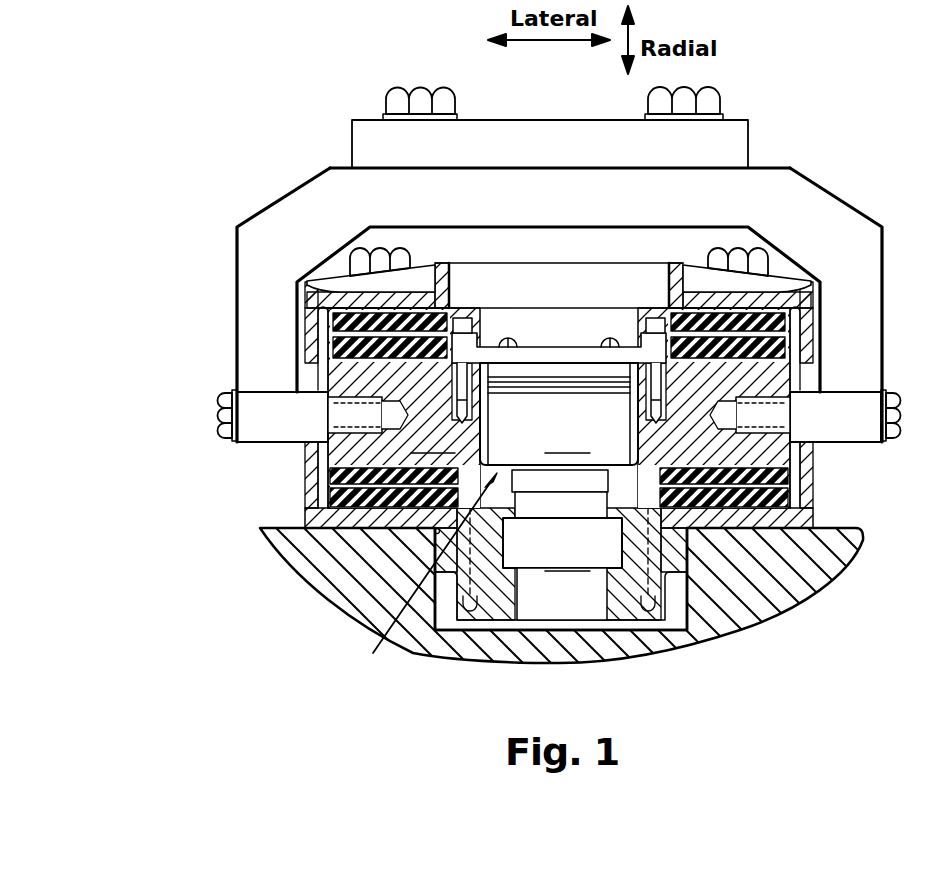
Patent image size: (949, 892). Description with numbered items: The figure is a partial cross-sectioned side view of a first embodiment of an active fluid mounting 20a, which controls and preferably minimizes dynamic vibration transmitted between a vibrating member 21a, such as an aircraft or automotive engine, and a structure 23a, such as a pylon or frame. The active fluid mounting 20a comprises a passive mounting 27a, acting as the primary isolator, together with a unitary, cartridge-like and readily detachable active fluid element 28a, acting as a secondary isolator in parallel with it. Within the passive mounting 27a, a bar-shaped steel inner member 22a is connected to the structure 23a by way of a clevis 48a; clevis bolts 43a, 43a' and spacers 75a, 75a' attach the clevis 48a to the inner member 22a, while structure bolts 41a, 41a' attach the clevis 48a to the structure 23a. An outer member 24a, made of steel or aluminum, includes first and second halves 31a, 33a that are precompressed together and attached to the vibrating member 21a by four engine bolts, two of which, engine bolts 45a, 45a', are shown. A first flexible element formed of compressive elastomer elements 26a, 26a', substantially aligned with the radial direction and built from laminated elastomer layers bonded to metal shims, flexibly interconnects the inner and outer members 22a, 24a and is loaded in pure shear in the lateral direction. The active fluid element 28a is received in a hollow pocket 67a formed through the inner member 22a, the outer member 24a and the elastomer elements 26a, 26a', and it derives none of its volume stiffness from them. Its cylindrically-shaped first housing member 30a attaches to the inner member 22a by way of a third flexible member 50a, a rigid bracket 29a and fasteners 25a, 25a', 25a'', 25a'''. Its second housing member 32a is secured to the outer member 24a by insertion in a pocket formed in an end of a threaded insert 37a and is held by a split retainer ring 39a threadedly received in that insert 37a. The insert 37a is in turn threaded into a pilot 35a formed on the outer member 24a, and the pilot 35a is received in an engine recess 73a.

The active fluid mounting 20a is at (288, 281).
The vibrating member 21a is at (273, 567).
The inner member 22a is at (559, 400).
The structure 23a is at (510, 120).
The outer member 24a is at (683, 283).
The fastener 25a is at (535, 316).
The fastener 25a' is at (596, 310).
The fastener 25a'' is at (499, 345).
The fastener 25a''' is at (648, 348).
The compressive elastomer element 26a is at (482, 335).
The compressive elastomer element 26a' is at (501, 482).
The passive mounting 27a is at (828, 272).
The active fluid element 28a is at (418, 582).
The rigid bracket 29a is at (538, 348).
The first housing member 30a is at (559, 414).
The first half 31a is at (805, 320).
The second housing member 32a is at (562, 545).
The second half 33a is at (815, 507).
The pilot 35a is at (690, 565).
The threaded insert 37a is at (640, 622).
The split retainer ring 39a is at (640, 517).
The structure bolt 41a is at (382, 84).
The structure bolt 41a' is at (723, 77).
The clevis bolt 43a is at (193, 429).
The clevis bolt 43a' is at (915, 423).
The engine bolt 45a is at (425, 238).
The engine bolt 45a' is at (765, 238).
The clevis 48a is at (812, 170).
The third flexible member 50a is at (530, 392).
The hollow pocket 67a is at (450, 290).
The engine recess 73a is at (468, 608).
The spacer 75a is at (290, 403).
The spacer 75a' is at (828, 403).